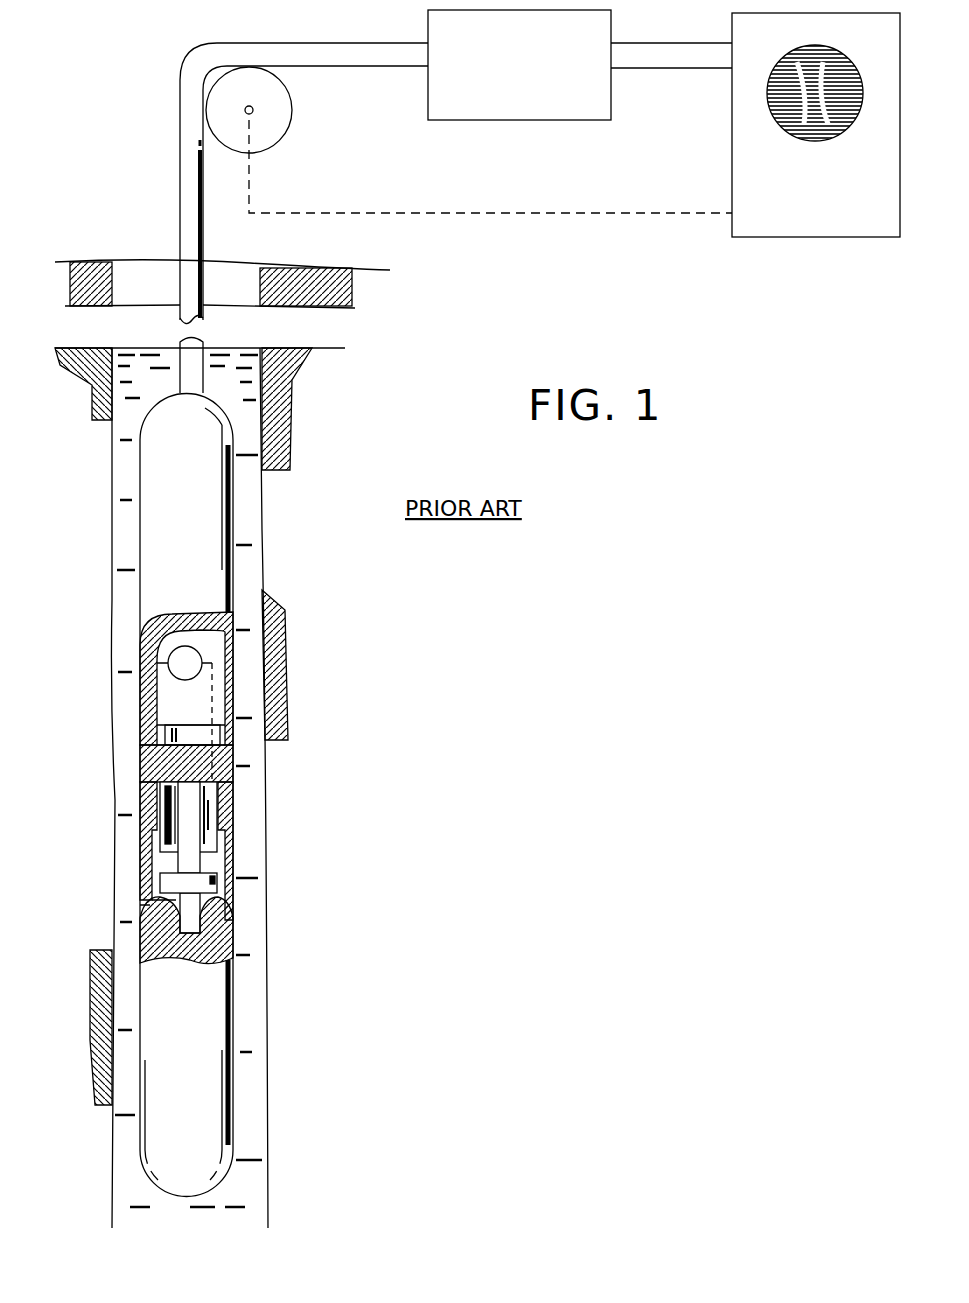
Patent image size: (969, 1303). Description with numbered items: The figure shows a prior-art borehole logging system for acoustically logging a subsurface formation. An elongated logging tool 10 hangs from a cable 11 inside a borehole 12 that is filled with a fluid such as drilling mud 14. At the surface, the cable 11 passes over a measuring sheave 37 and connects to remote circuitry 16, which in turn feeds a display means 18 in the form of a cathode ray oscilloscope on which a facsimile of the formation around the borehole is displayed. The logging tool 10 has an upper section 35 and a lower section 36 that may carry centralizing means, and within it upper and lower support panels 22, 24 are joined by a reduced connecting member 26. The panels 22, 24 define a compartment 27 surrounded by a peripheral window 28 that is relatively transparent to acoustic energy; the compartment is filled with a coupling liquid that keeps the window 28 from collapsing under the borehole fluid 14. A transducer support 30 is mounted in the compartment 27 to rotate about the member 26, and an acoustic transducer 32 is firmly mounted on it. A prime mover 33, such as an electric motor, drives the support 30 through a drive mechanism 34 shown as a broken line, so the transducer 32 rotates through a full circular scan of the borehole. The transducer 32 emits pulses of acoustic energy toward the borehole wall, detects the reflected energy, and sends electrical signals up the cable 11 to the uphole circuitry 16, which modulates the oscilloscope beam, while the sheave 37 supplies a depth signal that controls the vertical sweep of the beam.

The logging tool 10 is at (235, 507).
The cable 11 is at (180, 152).
The borehole 12 is at (265, 570).
The drilling mud 14 is at (125, 473).
The remote circuitry 16 is at (552, 121).
The display means 18 is at (732, 150).
The upper support panel 22 is at (150, 762).
The lower support panel 24 is at (222, 940).
The connecting member 26 is at (160, 797).
The compartment 27 is at (165, 901).
The peripheral window 28 is at (140, 860).
The transducer support 30 is at (210, 868).
The acoustic transducer 32 is at (215, 890).
The prime mover 33 is at (150, 657).
The drive mechanism 34 is at (215, 822).
The upper section 35 is at (140, 586).
The lower section 36 is at (140, 1131).
The measuring sheave 37 is at (289, 128).